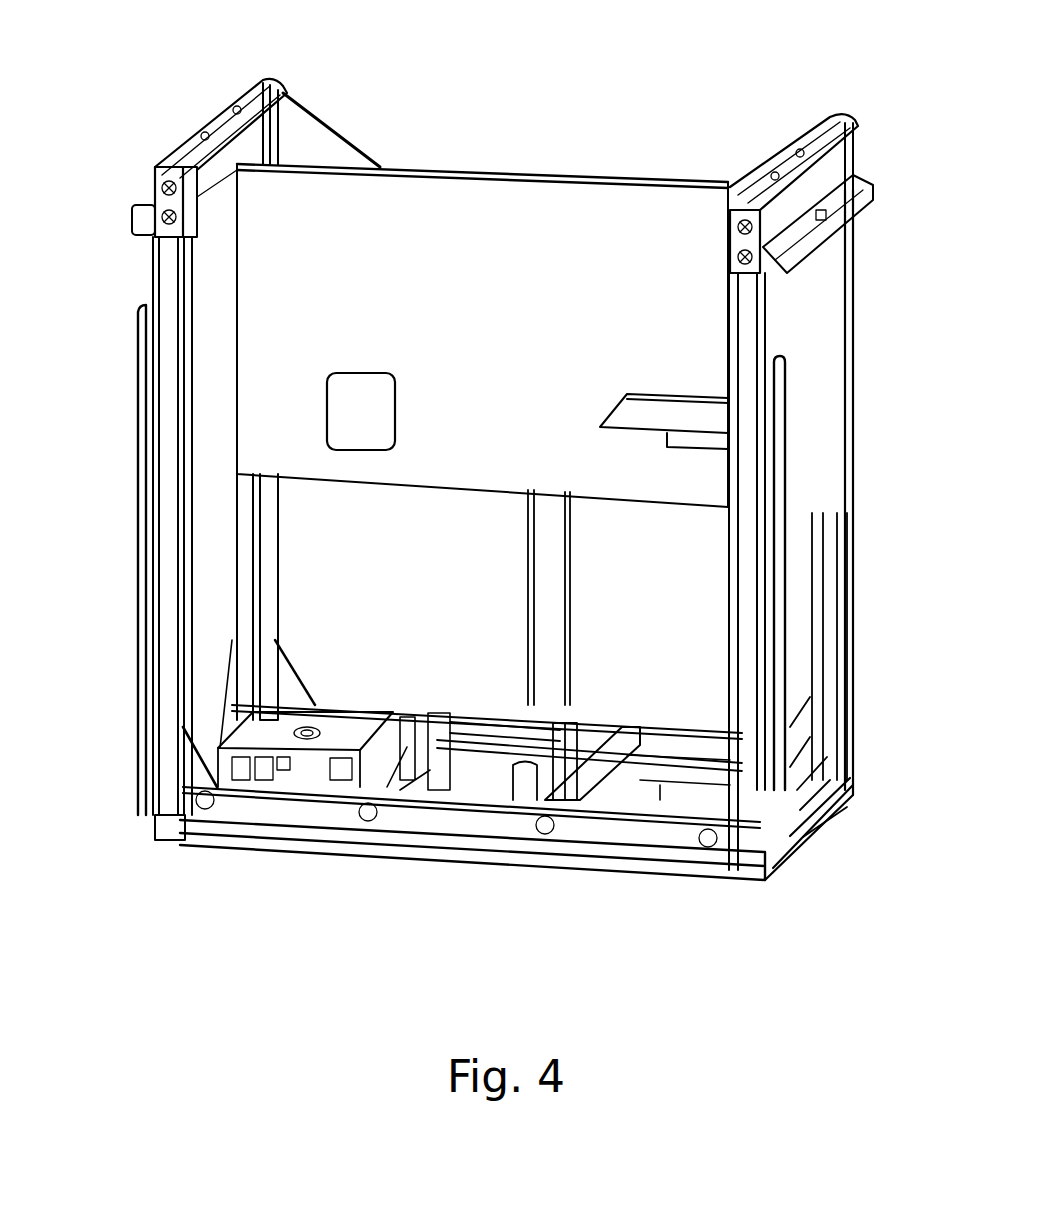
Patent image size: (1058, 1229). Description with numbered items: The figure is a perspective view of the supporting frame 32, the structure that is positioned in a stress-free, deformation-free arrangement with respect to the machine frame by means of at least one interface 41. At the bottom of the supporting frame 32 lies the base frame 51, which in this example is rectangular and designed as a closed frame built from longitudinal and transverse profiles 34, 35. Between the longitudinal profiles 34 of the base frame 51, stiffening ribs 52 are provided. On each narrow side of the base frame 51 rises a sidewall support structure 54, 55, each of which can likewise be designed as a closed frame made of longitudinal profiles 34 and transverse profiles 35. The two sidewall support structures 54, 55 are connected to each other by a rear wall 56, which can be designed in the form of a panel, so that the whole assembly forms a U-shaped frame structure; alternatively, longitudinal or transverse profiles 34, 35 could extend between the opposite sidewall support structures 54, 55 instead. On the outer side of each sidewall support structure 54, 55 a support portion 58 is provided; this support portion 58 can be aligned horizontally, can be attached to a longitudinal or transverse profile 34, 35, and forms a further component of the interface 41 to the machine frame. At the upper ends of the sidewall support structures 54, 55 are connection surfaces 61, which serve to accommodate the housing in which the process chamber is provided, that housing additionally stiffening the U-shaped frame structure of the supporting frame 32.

The supporting frame 32 is at (360, 885).
The longitudinal profile 34 is at (183, 548).
The transverse profile 35 is at (285, 115).
The interface 41 is at (100, 205).
The base frame 51 is at (620, 872).
The stiffening rib 52 is at (580, 823).
The sidewall support structure 54 is at (135, 293).
The sidewall support structure 55 is at (865, 405).
The rear wall 56 is at (418, 198).
The support portion 58 is at (135, 236).
The connection surface 61 is at (248, 84).